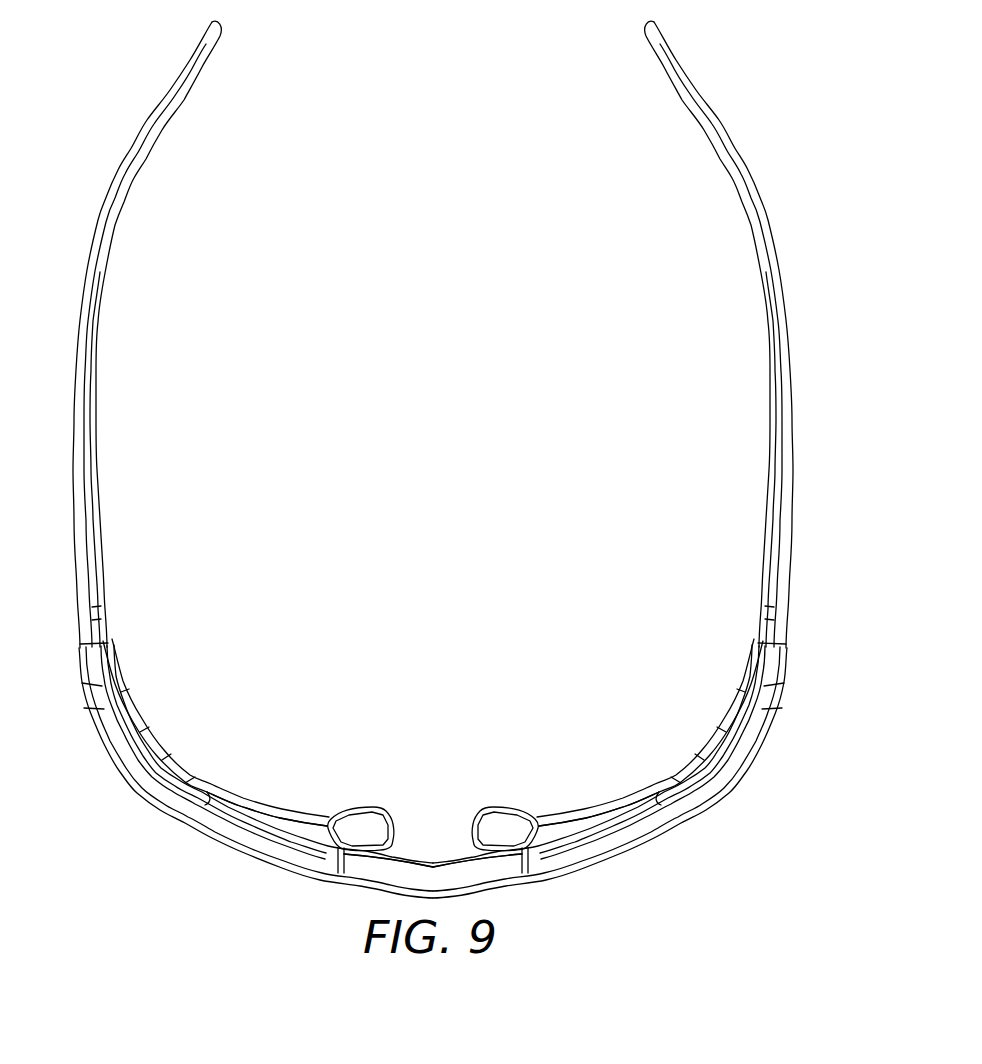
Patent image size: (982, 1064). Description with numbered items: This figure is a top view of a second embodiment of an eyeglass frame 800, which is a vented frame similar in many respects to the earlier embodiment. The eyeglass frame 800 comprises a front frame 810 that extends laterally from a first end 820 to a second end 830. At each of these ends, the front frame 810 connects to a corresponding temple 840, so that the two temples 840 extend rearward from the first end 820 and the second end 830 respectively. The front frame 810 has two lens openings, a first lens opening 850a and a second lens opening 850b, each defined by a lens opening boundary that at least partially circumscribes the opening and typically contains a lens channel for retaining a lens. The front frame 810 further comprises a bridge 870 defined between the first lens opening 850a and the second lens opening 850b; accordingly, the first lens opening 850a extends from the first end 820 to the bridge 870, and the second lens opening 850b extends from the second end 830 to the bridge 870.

The eyeglass frame 800 is at (827, 482).
The front frame 810 is at (572, 877).
The first end 820 is at (135, 793).
The second end 830 is at (752, 768).
The temple 840 is at (90, 393).
The first lens opening 850a is at (267, 838).
The second lens opening 850b is at (617, 816).
The bridge 870 is at (442, 860).